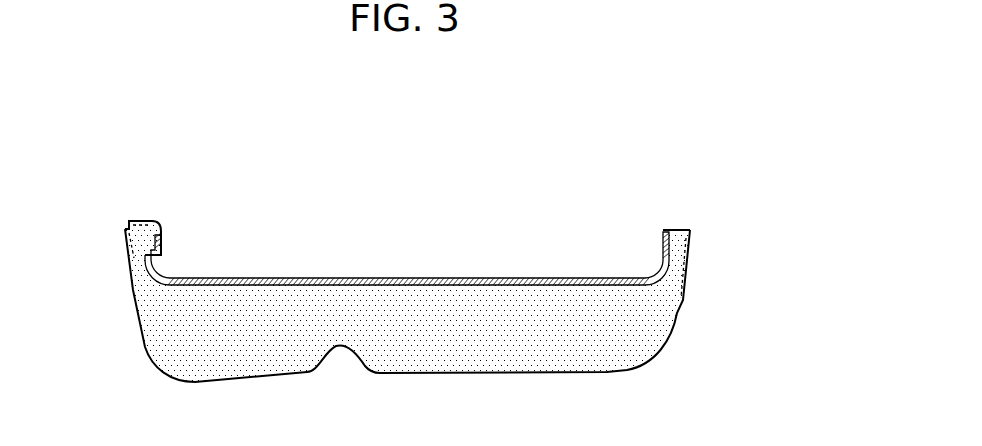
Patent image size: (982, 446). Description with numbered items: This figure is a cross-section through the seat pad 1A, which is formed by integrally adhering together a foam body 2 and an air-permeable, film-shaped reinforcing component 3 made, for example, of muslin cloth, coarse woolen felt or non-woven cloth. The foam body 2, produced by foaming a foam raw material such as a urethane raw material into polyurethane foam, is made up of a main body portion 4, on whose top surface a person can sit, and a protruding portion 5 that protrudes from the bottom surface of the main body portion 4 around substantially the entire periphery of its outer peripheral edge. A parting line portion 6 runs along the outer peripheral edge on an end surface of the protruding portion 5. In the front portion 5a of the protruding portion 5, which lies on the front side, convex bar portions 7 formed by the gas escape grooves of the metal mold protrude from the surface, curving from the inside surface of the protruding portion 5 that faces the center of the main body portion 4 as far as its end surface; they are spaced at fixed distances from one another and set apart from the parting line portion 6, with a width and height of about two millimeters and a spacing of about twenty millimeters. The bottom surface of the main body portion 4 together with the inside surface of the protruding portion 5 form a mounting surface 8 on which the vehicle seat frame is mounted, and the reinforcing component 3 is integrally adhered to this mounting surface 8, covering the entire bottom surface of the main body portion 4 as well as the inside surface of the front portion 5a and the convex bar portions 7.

The seat pad 1A is at (612, 147).
The foam body 2 is at (756, 257).
The reinforcing component 3 is at (228, 279).
The main body portion 4 is at (647, 323).
The protruding portion 5 is at (678, 252).
The front portion 5a is at (138, 254).
The parting line portion 6 is at (125, 228).
The convex bar portion 7 is at (145, 221).
The mounting surface 8 is at (412, 279).